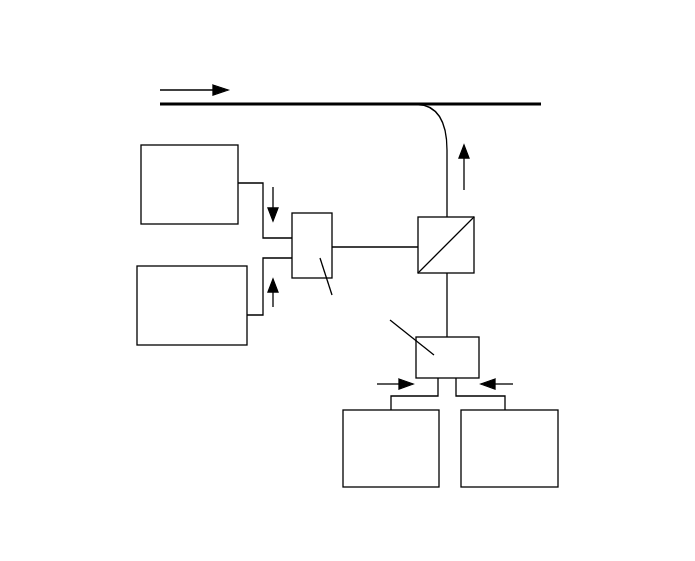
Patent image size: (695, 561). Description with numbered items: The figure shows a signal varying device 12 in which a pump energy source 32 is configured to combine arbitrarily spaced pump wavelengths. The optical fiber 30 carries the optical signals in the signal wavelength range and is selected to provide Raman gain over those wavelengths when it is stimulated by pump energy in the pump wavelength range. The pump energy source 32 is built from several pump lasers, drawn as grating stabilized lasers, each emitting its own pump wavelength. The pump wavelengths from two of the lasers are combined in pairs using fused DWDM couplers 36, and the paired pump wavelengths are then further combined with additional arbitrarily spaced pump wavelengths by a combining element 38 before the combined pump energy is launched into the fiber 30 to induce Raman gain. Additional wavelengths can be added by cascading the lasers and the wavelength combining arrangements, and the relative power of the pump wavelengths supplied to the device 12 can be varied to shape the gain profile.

The signal varying device 12 is at (450, 66).
The optical fiber 30 is at (323, 104).
The pump energy source 32 is at (141, 188).
The fused DWDM coupler 36 is at (323, 213).
The wavelength division multiplexer / combiner 38 is at (475, 255).